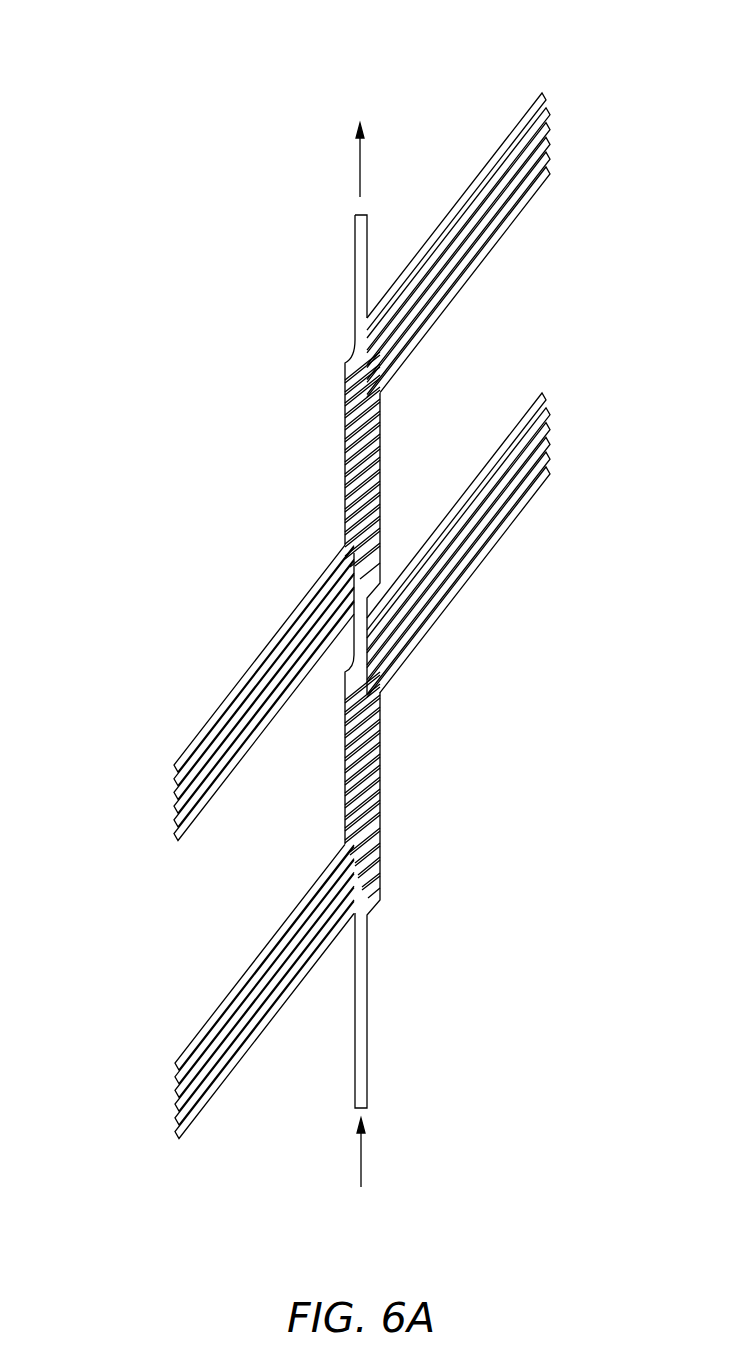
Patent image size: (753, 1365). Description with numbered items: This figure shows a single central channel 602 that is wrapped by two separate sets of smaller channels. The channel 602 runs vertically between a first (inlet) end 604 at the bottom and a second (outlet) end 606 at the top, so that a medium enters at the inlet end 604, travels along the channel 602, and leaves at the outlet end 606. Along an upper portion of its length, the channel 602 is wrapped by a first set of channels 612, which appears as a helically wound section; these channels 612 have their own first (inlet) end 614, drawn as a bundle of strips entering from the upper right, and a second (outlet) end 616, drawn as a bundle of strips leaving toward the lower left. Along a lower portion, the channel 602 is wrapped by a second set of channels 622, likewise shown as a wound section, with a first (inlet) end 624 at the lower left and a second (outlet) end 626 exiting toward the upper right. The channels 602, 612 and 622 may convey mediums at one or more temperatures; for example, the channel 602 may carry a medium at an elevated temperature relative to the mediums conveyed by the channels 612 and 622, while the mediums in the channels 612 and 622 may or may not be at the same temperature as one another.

The channel 602 is at (368, 961).
The first (inlet) end 604 is at (361, 1169).
The second (outlet) end 606 is at (360, 145).
The first set of channels 612 is at (318, 341).
The first (inlet) end of the first set of channels 614 is at (584, 107).
The second (outlet) end of the first set of channels 616 is at (150, 818).
The second set of channels 622 is at (403, 698).
The first (inlet) end of the second set of channels 624 is at (135, 1139).
The second (outlet) end of the second set of channels 626 is at (568, 430).